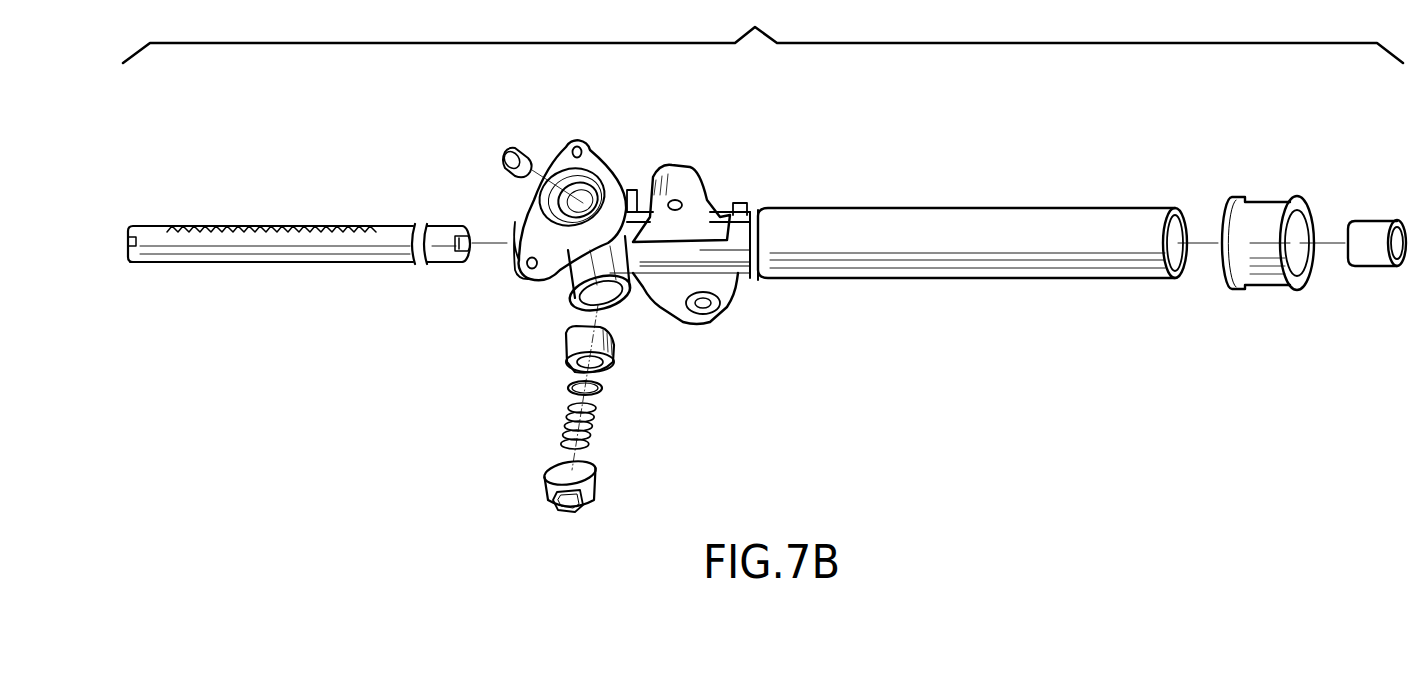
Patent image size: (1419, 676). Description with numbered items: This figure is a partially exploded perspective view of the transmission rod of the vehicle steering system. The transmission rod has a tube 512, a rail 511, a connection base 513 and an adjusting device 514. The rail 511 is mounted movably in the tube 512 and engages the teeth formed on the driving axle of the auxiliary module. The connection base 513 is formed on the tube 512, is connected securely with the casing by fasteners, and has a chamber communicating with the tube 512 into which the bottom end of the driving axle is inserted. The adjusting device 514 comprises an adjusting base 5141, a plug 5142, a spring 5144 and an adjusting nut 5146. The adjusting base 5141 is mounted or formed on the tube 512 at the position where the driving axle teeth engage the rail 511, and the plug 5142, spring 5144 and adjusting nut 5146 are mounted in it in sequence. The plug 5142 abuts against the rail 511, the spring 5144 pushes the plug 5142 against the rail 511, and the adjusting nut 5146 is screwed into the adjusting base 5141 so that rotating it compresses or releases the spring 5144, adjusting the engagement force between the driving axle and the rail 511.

The rail 511 is at (273, 228).
The tube 512 is at (950, 212).
The connection base 513 is at (558, 162).
The adjusting device 514 is at (654, 415).
The adjusting base 5141 is at (627, 272).
The plug 5142 is at (578, 338).
The spring 5144 is at (572, 418).
The adjusting nut 5146 is at (570, 480).